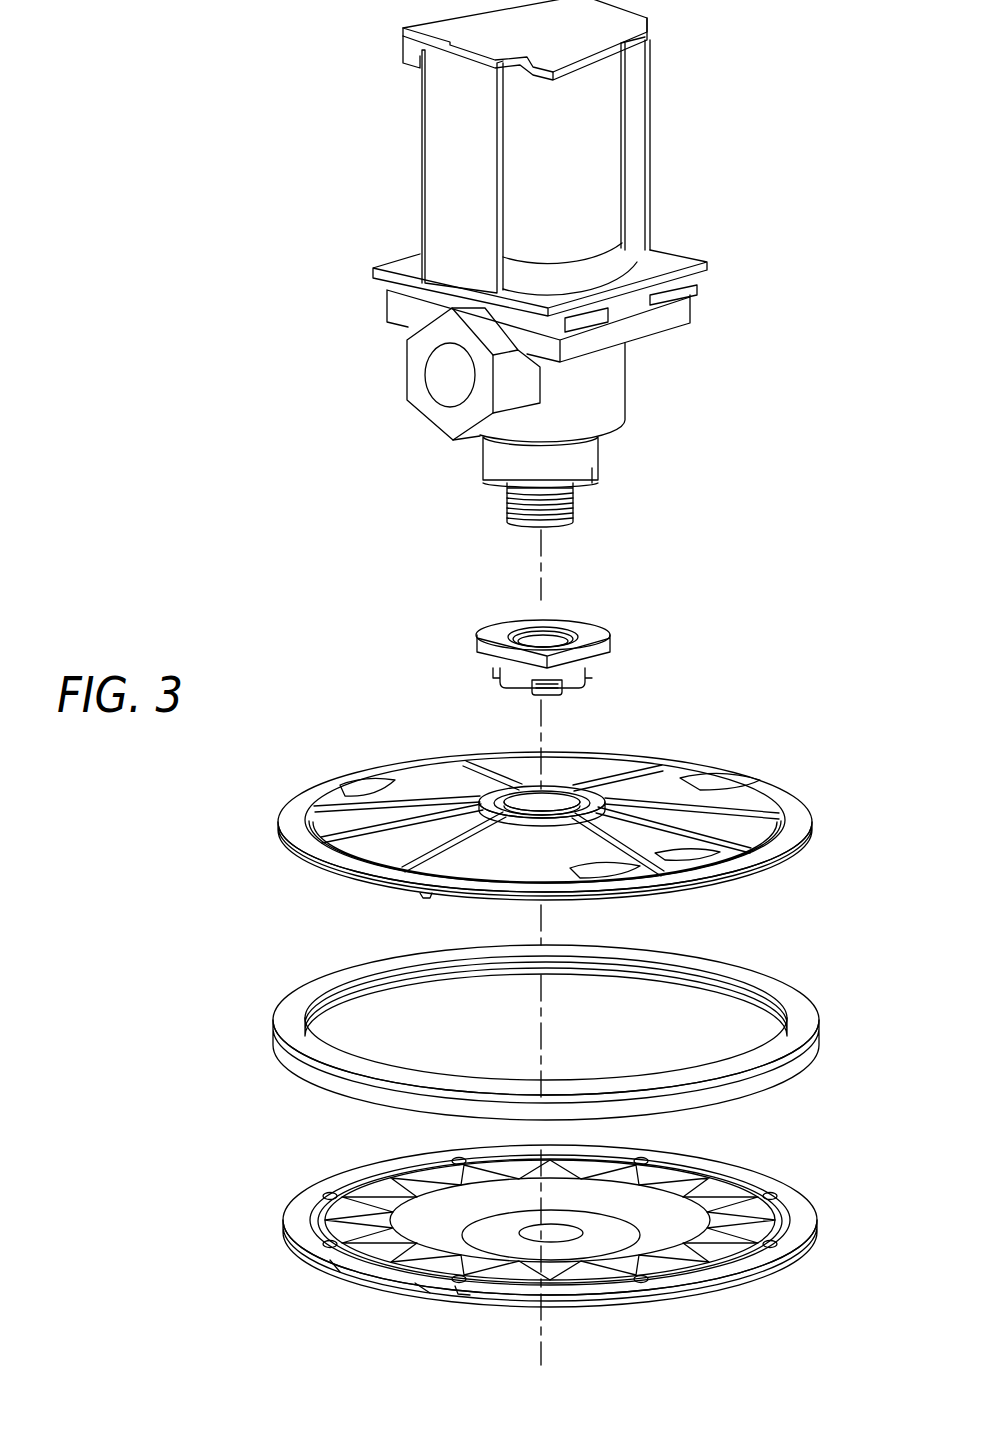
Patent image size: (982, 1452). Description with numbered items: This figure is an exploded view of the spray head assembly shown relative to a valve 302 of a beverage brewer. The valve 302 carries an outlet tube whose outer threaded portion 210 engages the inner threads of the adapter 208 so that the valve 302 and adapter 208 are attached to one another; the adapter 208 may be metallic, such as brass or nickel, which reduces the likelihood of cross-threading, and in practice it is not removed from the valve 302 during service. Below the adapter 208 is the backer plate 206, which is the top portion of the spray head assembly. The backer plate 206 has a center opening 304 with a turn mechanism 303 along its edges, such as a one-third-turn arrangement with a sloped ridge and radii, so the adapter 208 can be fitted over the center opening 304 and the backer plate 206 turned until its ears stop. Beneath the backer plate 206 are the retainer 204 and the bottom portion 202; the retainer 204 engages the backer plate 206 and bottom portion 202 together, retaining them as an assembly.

The valve 302 is at (282, 230).
The threaded portion 210 is at (507, 492).
The adapter 208 is at (477, 648).
The backer plate 206 is at (287, 827).
The center opening 304 is at (512, 807).
The turn mechanism 303 is at (572, 797).
The retainer 204 is at (287, 1053).
The bottom portion 202 is at (297, 1226).